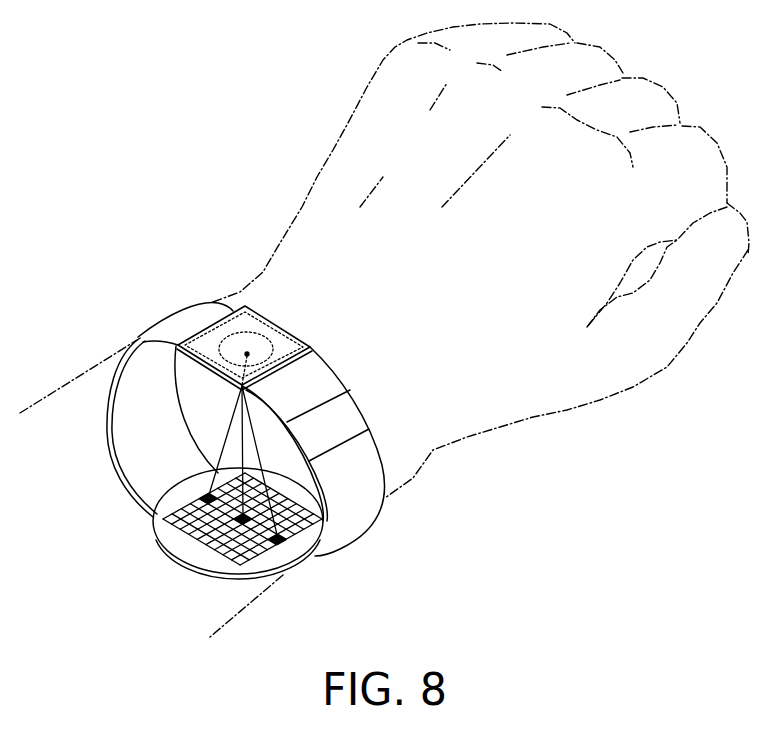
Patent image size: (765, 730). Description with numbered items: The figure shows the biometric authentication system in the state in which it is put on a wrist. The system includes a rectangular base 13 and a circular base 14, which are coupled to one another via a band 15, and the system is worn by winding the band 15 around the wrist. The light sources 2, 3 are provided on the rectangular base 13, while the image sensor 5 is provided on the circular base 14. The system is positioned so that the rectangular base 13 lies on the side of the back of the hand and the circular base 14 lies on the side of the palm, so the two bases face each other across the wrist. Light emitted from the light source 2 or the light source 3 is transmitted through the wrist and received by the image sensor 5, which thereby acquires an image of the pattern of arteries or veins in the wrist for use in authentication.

The light source 2 is at (246, 297).
The light source 3 is at (248, 348).
The image sensor 5 is at (172, 505).
The rectangular base 13 is at (230, 327).
The circular base 14 is at (303, 548).
The band 15 is at (340, 376).